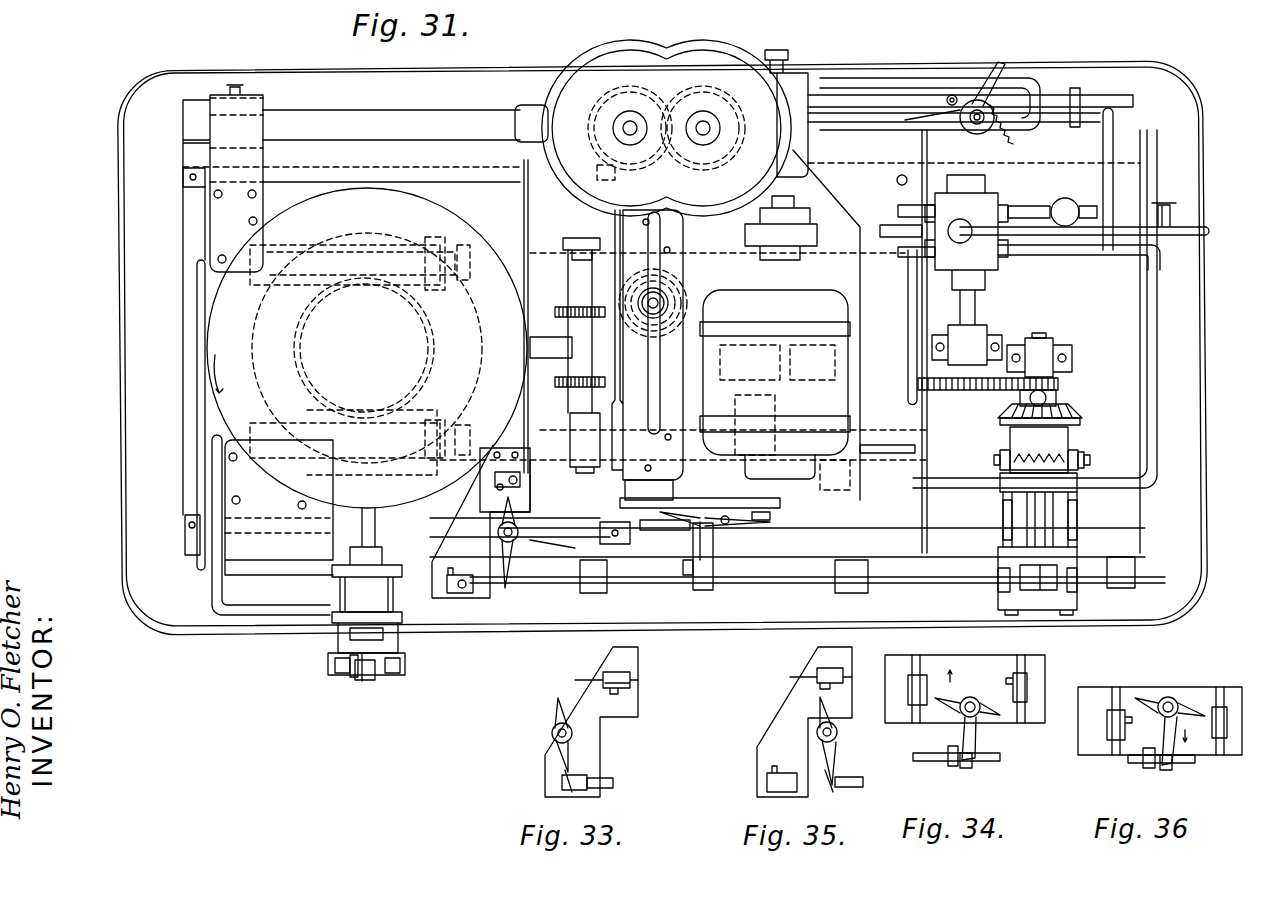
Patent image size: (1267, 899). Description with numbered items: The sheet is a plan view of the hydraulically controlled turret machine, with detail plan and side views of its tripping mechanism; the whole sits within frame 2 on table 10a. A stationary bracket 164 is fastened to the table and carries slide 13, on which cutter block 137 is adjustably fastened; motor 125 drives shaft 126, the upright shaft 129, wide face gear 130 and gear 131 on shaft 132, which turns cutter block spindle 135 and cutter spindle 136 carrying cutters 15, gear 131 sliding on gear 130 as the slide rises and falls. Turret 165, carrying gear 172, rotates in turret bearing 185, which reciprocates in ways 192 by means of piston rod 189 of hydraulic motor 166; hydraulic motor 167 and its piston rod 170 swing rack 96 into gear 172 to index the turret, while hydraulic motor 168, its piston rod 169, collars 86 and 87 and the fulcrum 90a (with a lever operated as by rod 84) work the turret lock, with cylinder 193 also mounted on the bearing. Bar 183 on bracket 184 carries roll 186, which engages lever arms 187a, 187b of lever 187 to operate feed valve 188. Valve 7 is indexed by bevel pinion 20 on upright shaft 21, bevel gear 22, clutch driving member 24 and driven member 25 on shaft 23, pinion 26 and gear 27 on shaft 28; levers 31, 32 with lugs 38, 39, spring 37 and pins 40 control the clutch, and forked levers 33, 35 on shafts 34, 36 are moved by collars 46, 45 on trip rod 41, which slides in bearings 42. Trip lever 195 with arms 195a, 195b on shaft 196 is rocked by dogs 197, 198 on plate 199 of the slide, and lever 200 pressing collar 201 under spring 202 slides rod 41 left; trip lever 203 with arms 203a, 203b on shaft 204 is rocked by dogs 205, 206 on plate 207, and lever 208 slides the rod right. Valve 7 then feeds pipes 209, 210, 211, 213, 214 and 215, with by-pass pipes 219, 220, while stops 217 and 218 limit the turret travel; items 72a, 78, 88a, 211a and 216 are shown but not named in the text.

In FIG. 31, the frame 2 is at (140, 610).
In FIG. 31, the valve 7 is at (966, 232).
In FIG. 31, the table 10a is at (1143, 366).
In FIG. 31, the slide 13 is at (625, 490).
In FIG. 31, the cutters 15 is at (560, 388).
In FIG. 31, the bevel pinion 20 is at (1050, 396).
In FIG. 31, the upright shaft 21 is at (1057, 400).
In FIG. 31, the bevel gear 22 is at (1082, 421).
In FIG. 31, the shaft 23 is at (1045, 520).
In FIG. 31, the clutch driving member 24 is at (1005, 427).
In FIG. 31, the driven member 25 is at (1008, 477).
In FIG. 31, the pinion 26 is at (1045, 375).
In FIG. 31, the gear 27 is at (950, 393).
In FIG. 31, the shaft 28 is at (976, 320).
In FIG. 31, the lever 31 is at (1084, 465).
In FIG. 31, the lever 32 is at (1000, 455).
In FIG. 31, the lever 33 is at (1070, 585).
In FIG. 31, the shaft 34 is at (1077, 505).
In FIG. 31, the lever 35 is at (1005, 585).
In FIG. 31, the shaft 36 is at (1003, 508).
In FIG. 31, the spring 37 is at (1039, 450).
In FIG. 31, the lug 38 is at (1080, 455).
In FIG. 31, the lug 39 is at (1008, 470).
In FIG. 31, the pins 40 is at (1090, 462).
In FIG. 31, the trip rod 41 is at (800, 583).
In FIG. 33, the trip rod 41 is at (612, 788).
In FIG. 35, the trip rod 41 is at (862, 787).
In FIG. 34, the trip rod 41 is at (928, 760).
In FIG. 36, the trip rod 41 is at (1128, 762).
In FIG. 31, the bearings 42 is at (857, 575).
In FIG. 31, the collar 45 is at (998, 581).
In FIG. 31, the collar 46 is at (1080, 581).
In FIG. 31, the valve rod 72a is at (1172, 225).
In FIG. 31, the support member 78 is at (683, 380).
In FIG. 31, the rod 84 is at (350, 540).
In FIG. 31, the collar 86 is at (360, 672).
In FIG. 31, the collar 87 is at (378, 675).
In FIG. 31, the bracket 88a is at (340, 675).
In FIG. 31, the fulcrum 90a is at (408, 665).
In FIG. 31, the rack 96 is at (475, 426).
In FIG. 31, the motor 125 is at (818, 293).
In FIG. 31, the shaft 126 is at (788, 208).
In FIG. 31, the upright shaft 129 is at (708, 122).
In FIG. 31, the wide face gear 130 is at (700, 95).
In FIG. 31, the gear 131 is at (612, 97).
In FIG. 31, the shaft 132 is at (633, 120).
In FIG. 31, the cutter block spindle 135 is at (565, 245).
In FIG. 31, the cutter spindle 136 is at (587, 449).
In FIG. 31, the cutter block 137 is at (515, 123).
In FIG. 31, the stationary bracket 164 is at (898, 455).
In FIG. 31, the turret 165 is at (452, 225).
In FIG. 31, the hydraulic motor 166 is at (885, 388).
In FIG. 31, the hydraulic motor 167 is at (845, 470).
In FIG. 31, the hydraulic motor 168 is at (348, 607).
In FIG. 31, the piston rod 169 is at (366, 688).
In FIG. 31, the piston rod 170 is at (522, 480).
In FIG. 31, the gear 172 is at (438, 350).
In FIG. 31, the bar 183 is at (1113, 96).
In FIG. 31, the bracket 184 is at (263, 135).
In FIG. 31, the turret bearing 185 is at (561, 302).
In FIG. 31, the roll 186 is at (952, 96).
In FIG. 36, the roll 186 is at (1166, 698).
In FIG. 31, the lever 187 is at (972, 130).
In FIG. 31, the lever arm 187a is at (935, 112).
In FIG. 31, the lever arm 187b is at (1000, 62).
In FIG. 31, the valve 188 is at (1002, 125).
In FIG. 31, the piston rod 189 is at (553, 358).
In FIG. 31, the ways 192 is at (262, 538).
In FIG. 31, the cylinder 193 is at (250, 285).
In FIG. 34, the trip lever 195 is at (972, 697).
In FIG. 36, the trip lever 195 is at (1173, 698).
In FIG. 31, the arm 195a is at (728, 517).
In FIG. 34, the arm 195a is at (993, 714).
In FIG. 36, the arm 195a is at (1195, 716).
In FIG. 31, the arm 195b is at (688, 530).
In FIG. 34, the arm 195b is at (943, 710).
In FIG. 36, the arm 195b is at (1145, 700).
In FIG. 31, the shaft 196 is at (712, 570).
In FIG. 34, the shaft 196 is at (968, 697).
In FIG. 31, the dog 197 is at (667, 530).
In FIG. 34, the dog 197 is at (918, 675).
In FIG. 36, the dog 197 is at (1127, 710).
In FIG. 31, the dog 198 is at (770, 515).
In FIG. 34, the dog 198 is at (1010, 673).
In FIG. 36, the dog 198 is at (1214, 707).
In FIG. 31, the plate 199 is at (770, 505).
In FIG. 34, the plate 199 is at (1045, 655).
In FIG. 36, the plate 199 is at (1090, 676).
In FIG. 31, the lever 200 is at (713, 582).
In FIG. 34, the lever 200 is at (972, 762).
In FIG. 36, the lever 200 is at (1170, 765).
In FIG. 31, the collar 201 is at (695, 527).
In FIG. 34, the collar 201 is at (952, 768).
In FIG. 36, the collar 201 is at (1145, 768).
In FIG. 31, the spring 202 is at (738, 521).
In FIG. 31, the trip lever 203 is at (498, 535).
In FIG. 33, the trip lever 203 is at (552, 731).
In FIG. 35, the trip lever 203 is at (838, 732).
In FIG. 31, the arm 203a is at (513, 501).
In FIG. 33, the arm 203a is at (556, 704).
In FIG. 35, the arm 203a is at (820, 704).
In FIG. 31, the arm 203b is at (515, 582).
In FIG. 33, the arm 203b is at (575, 752).
In FIG. 35, the arm 203b is at (838, 760).
In FIG. 31, the shaft 204 is at (500, 529).
In FIG. 33, the shaft 204 is at (556, 737).
In FIG. 35, the shaft 204 is at (820, 728).
In FIG. 31, the dog 205 is at (494, 488).
In FIG. 33, the dog 205 is at (640, 692).
In FIG. 35, the dog 205 is at (817, 690).
In FIG. 31, the dog 206 is at (450, 593).
In FIG. 33, the dog 206 is at (580, 780).
In FIG. 35, the dog 206 is at (782, 765).
In FIG. 31, the plate 207 is at (440, 560).
In FIG. 33, the plate 207 is at (640, 713).
In FIG. 35, the plate 207 is at (757, 746).
In FIG. 31, the lever 208 is at (503, 590).
In FIG. 33, the lever 208 is at (558, 787).
In FIG. 35, the lever 208 is at (830, 790).
In FIG. 31, the pipe 209 is at (896, 211).
In FIG. 31, the pipe 210 is at (838, 125).
In FIG. 31, the pipe 211 is at (915, 440).
In FIG. 31, the pipe 211a is at (240, 615).
In FIG. 31, the pipe 213 is at (1035, 205).
In FIG. 31, the pipe 214 is at (888, 270).
In FIG. 31, the pipe 215 is at (197, 330).
In FIG. 31, the bracket 216 is at (618, 178).
In FIG. 31, the stops 217 is at (188, 515).
In FIG. 31, the stops 218 is at (600, 520).
In FIG. 31, the by-pass pipe 219 is at (908, 345).
In FIG. 31, the by-pass pipe 220 is at (1020, 78).